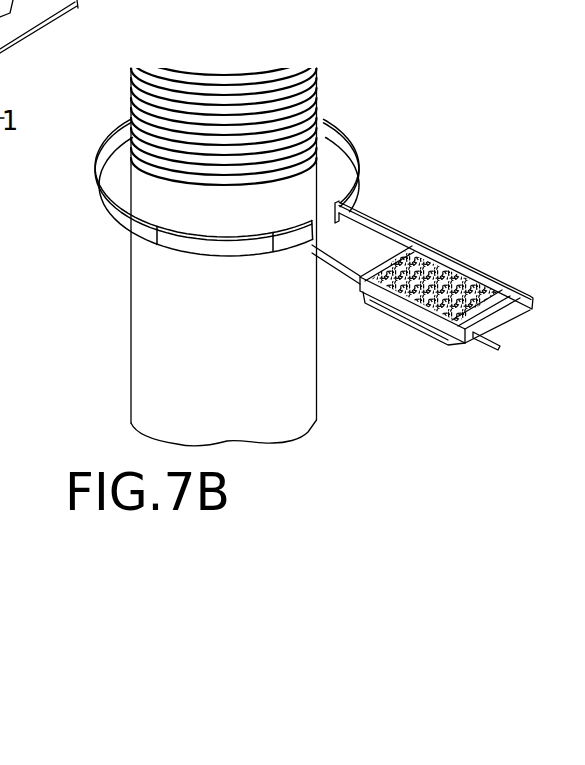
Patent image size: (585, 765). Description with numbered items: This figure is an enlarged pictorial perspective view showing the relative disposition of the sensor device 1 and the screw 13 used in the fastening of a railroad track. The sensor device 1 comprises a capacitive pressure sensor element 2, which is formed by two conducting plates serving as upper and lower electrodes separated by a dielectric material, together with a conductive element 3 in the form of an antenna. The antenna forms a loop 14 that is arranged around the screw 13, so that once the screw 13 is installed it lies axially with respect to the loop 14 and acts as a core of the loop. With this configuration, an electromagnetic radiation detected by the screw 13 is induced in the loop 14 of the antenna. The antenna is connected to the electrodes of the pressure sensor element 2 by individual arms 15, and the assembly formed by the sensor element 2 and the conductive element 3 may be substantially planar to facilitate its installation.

The sensor device 1 is at (447, 288).
The pressure sensor element 2 is at (443, 268).
The conductive element 3 is at (372, 222).
The screw 13 is at (170, 327).
The loop 14 is at (330, 135).
The arms 15 is at (500, 348).